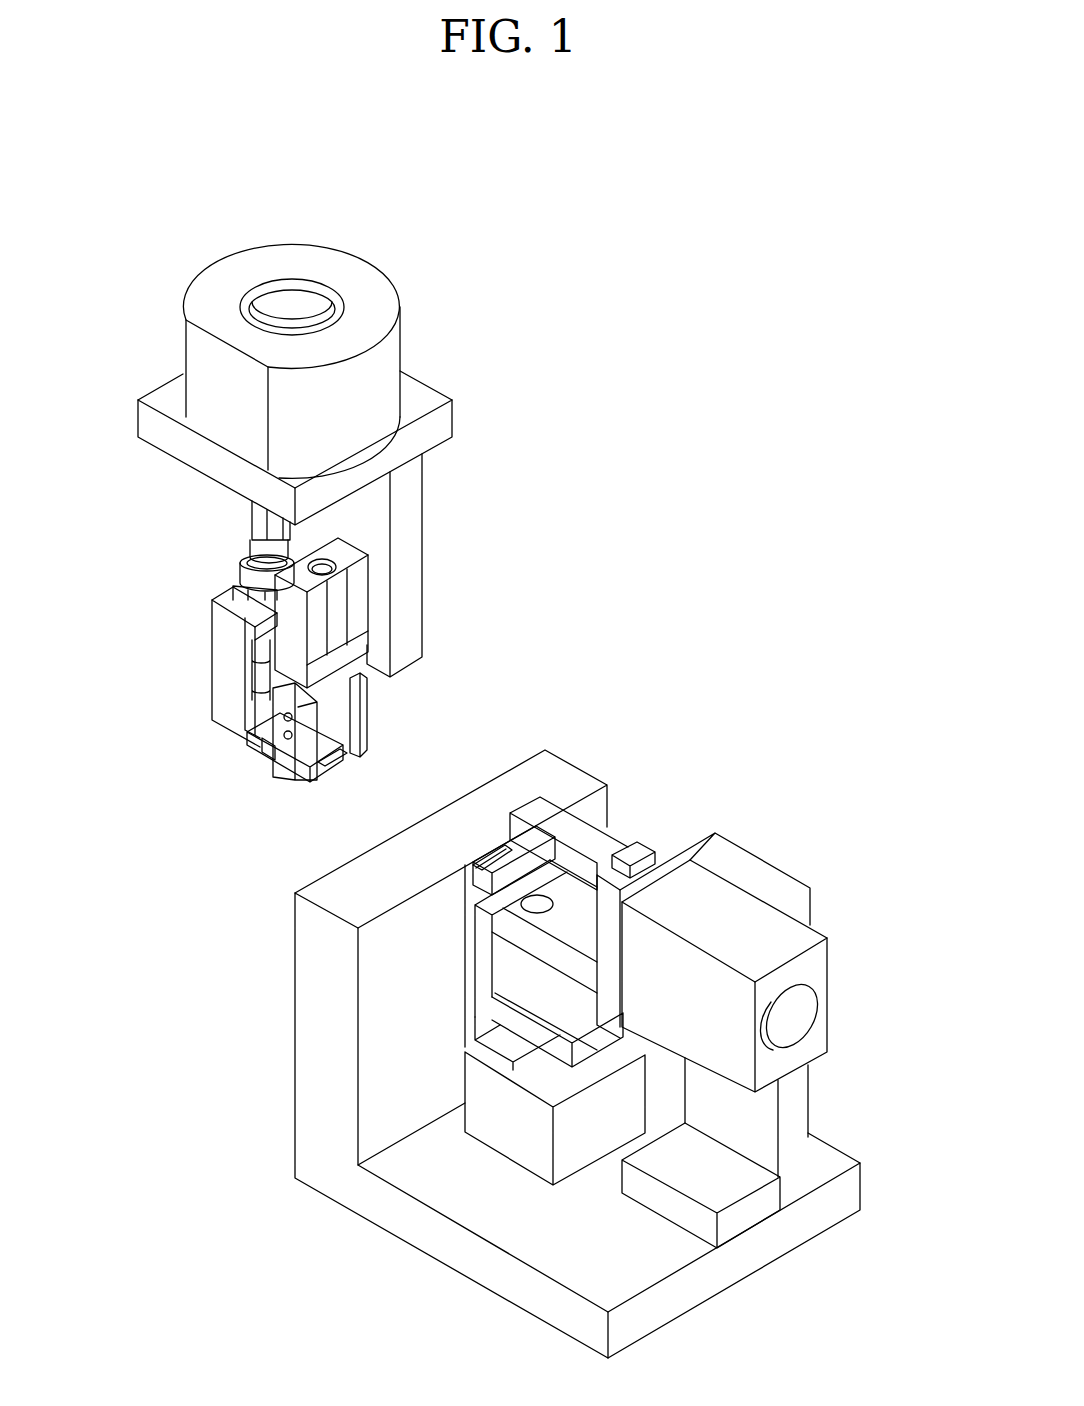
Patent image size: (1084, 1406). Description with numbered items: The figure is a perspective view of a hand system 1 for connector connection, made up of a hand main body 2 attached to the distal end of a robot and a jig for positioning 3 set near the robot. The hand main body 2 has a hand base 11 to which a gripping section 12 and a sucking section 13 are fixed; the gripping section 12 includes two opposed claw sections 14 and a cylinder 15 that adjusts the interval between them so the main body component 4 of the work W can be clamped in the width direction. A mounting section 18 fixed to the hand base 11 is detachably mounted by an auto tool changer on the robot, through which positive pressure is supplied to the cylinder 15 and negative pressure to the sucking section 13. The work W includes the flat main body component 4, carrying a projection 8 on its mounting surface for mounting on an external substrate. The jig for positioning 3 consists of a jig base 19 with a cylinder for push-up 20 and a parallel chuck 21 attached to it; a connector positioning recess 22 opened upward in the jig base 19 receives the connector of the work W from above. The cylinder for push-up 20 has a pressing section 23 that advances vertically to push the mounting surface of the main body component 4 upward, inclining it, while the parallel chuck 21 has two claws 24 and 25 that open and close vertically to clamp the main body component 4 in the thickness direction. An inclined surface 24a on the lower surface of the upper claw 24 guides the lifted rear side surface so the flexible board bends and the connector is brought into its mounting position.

The hand system 1 is at (657, 215).
The hand main body 2 is at (493, 288).
The jig for positioning 3 is at (676, 700).
The main body component 4 is at (325, 743).
The projection 8 is at (325, 775).
The hand base 11 is at (415, 540).
The gripping section 12 is at (385, 703).
The sucking section 13 is at (204, 734).
The claw sections 14 is at (365, 737).
The cylinder 15 is at (357, 601).
The mounting section 18 is at (311, 258).
The jig base 19 is at (668, 1295).
The cylinder for push-up 20 is at (510, 1142).
The parallel chuck 21 is at (665, 843).
The connector positioning recess 22 is at (482, 862).
The pressing section 23 is at (493, 898).
The claw 24 is at (543, 806).
The inclined surface 24a is at (540, 902).
The claw 25 is at (550, 950).
The work W is at (348, 781).